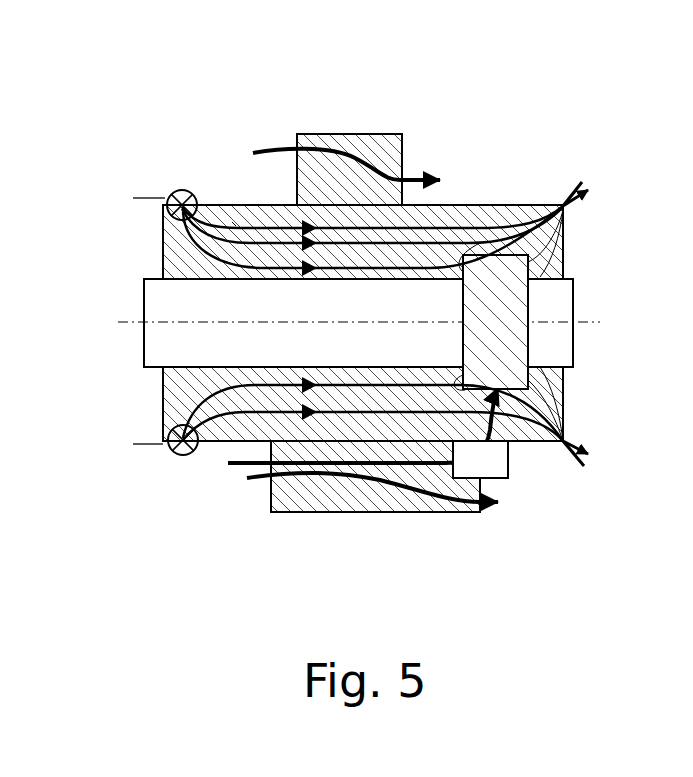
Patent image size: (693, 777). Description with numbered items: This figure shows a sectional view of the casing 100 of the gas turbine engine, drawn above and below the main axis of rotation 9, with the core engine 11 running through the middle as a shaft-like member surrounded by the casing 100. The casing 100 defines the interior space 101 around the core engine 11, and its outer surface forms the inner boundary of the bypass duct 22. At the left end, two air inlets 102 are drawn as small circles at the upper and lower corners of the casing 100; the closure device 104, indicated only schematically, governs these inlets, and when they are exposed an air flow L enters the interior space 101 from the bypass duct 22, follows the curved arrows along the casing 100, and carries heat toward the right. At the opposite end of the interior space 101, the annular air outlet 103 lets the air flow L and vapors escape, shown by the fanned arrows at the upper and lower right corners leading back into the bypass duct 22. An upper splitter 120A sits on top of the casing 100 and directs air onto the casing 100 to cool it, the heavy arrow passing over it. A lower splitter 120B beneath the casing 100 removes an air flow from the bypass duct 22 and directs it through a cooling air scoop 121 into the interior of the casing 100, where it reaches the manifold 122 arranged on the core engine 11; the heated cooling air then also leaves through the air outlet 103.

The casing 100 is at (480, 205).
The interior space 101 is at (260, 210).
The air inlet 102 is at (168, 184).
The air outlet 103 is at (578, 206).
The closure device 104 is at (160, 458).
The core engine 11 is at (163, 275).
The main axis of rotation 9 is at (118, 323).
The bypass duct 22 is at (250, 521).
The air flow L is at (232, 222).
The upper splitter 120A is at (373, 133).
The lower splitter 120B is at (363, 512).
The cooling air scoop 121 is at (512, 470).
The manifold 122 is at (522, 298).